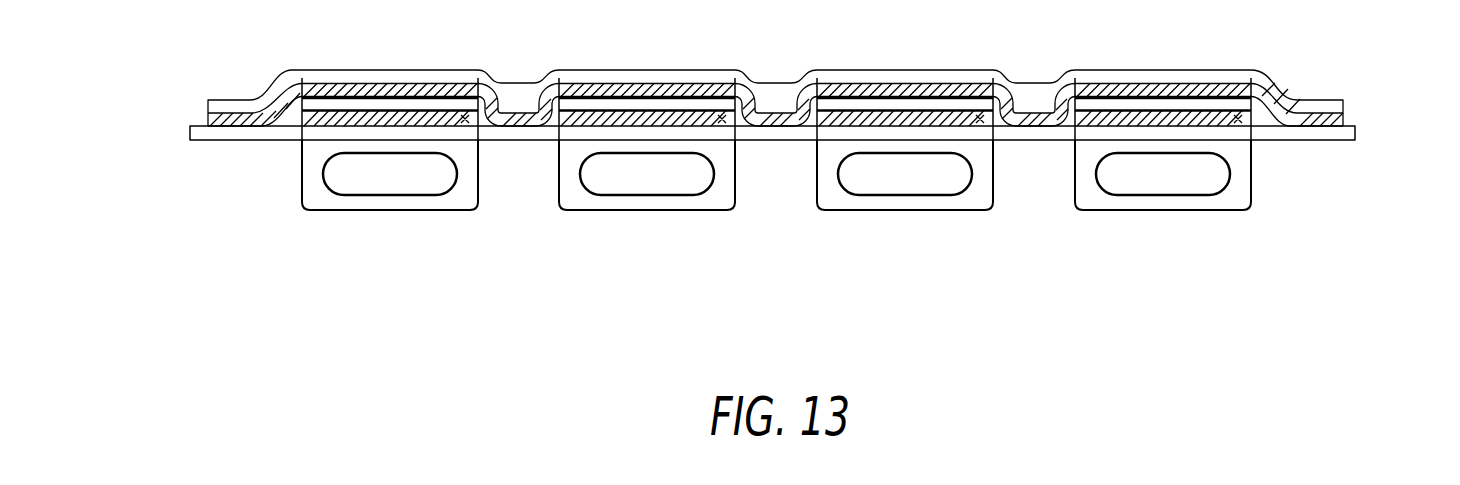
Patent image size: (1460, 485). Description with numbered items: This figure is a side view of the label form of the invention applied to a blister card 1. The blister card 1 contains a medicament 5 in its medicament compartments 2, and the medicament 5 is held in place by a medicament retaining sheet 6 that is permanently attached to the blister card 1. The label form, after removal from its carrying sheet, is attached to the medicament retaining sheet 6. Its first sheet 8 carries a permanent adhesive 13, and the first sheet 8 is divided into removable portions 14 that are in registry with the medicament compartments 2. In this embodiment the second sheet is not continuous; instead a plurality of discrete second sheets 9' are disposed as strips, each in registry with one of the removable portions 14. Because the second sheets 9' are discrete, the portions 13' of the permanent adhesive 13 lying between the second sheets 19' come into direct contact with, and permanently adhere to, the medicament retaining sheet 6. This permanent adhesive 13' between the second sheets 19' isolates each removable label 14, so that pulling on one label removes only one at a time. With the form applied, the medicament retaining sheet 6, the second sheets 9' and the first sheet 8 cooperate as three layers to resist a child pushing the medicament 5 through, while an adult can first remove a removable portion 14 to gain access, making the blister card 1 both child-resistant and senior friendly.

The blister card 1 is at (1305, 178).
The medicament compartment 2 is at (315, 212).
The medicament 5 is at (1155, 188).
The medicament retaining sheet 6 is at (1357, 137).
The first sheet 8 is at (1360, 98).
The second sheet 9' is at (740, 149).
The permanent adhesive 13 is at (178, 98).
The portion of permanent adhesive 13' is at (775, 63).
The removable portion 14 is at (384, 74).
The second sheet 19' is at (795, 199).